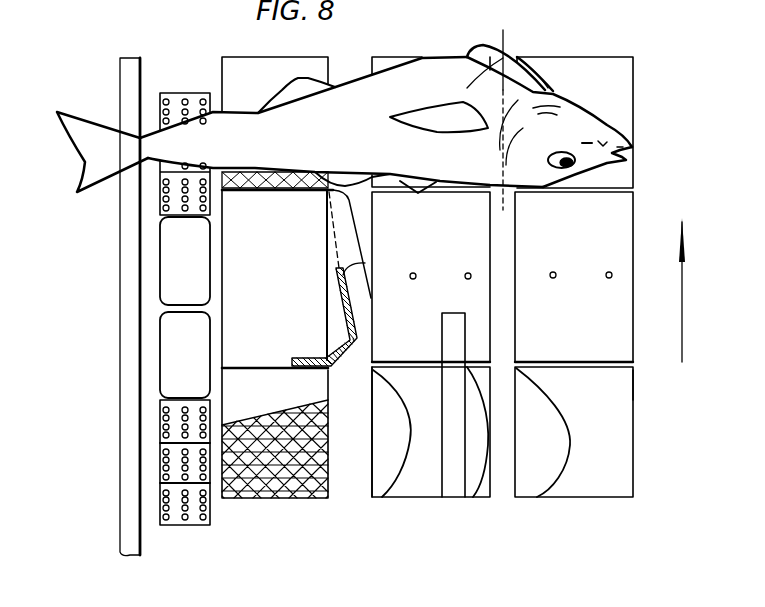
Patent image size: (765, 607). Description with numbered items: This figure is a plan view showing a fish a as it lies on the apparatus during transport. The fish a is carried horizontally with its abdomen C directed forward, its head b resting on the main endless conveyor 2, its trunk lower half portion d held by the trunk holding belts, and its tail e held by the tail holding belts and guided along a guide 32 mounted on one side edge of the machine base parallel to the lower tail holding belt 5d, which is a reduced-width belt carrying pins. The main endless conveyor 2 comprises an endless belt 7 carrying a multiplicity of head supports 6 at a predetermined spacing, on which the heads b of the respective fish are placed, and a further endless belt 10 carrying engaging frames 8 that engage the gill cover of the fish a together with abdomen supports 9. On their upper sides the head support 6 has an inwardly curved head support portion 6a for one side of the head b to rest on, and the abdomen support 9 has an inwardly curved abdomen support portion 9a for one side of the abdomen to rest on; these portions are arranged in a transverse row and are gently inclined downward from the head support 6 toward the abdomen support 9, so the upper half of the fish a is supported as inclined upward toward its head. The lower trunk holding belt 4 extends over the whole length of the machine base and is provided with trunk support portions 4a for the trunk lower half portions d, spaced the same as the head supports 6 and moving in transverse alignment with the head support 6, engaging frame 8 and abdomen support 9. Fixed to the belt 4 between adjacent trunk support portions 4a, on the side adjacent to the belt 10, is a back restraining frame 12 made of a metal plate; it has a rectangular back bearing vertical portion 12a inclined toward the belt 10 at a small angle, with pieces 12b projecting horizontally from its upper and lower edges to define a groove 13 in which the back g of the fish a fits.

The fish a is at (65, 195).
The head b is at (588, 162).
The abdomen C is at (503, 60).
The trunk lower half portion d is at (247, 133).
The tail e is at (100, 137).
The back g is at (460, 172).
The main endless conveyor 2 is at (500, 519).
The lower trunk holding endless conveyor belt 4 is at (220, 505).
The trunk support portion 4a is at (256, 192).
The lower tail holding belt 5d is at (167, 353).
The head support 6 is at (607, 100).
The head support portion 6a is at (533, 460).
The endless belt 7 is at (633, 388).
The engaging frame 8 is at (450, 468).
The abdomen support 9 is at (398, 497).
The abdomen support portion 9a is at (378, 418).
The endless belt 10 is at (372, 448).
The back restraining frame 12 is at (333, 307).
The back bearing vertical portion 12a is at (345, 306).
The pieces 12b is at (348, 243).
The groove 13 is at (365, 263).
The guide 32 is at (120, 460).